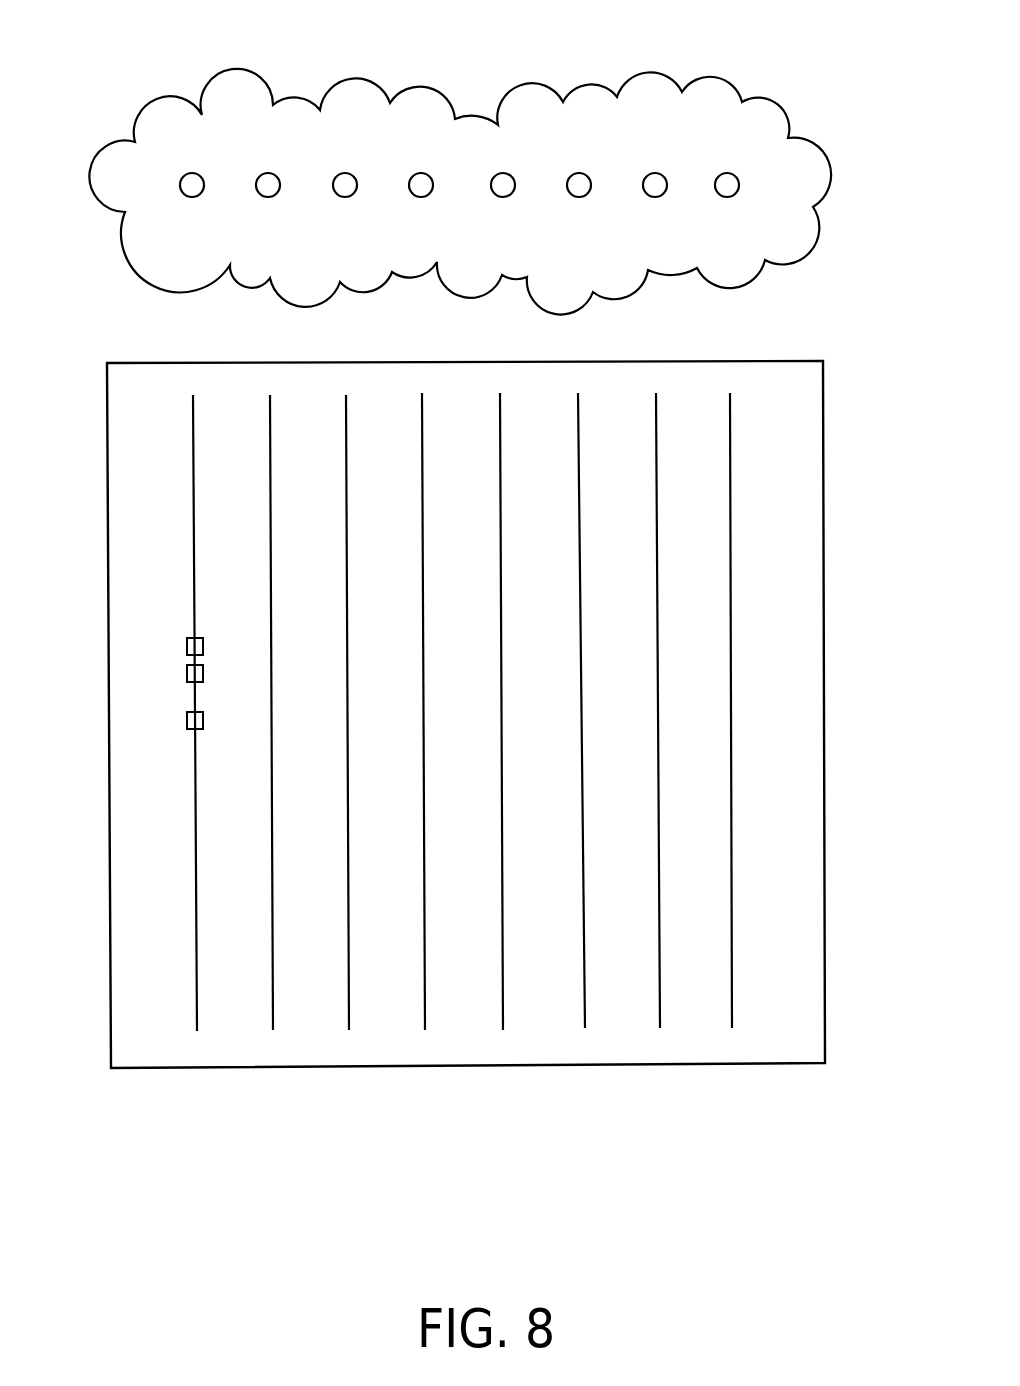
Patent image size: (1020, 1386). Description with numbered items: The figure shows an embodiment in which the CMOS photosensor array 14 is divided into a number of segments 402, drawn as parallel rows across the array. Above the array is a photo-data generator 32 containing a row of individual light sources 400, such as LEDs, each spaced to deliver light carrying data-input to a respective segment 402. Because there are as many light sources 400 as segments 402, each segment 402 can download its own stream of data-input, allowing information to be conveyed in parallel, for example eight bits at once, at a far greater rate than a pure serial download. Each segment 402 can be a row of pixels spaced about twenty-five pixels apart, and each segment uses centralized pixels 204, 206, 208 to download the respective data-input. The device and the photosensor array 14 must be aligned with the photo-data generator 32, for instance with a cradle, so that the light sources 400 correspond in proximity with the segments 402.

The CMOS photosensor array 14 is at (866, 493).
The photo-data generator 32 is at (769, 218).
The light source 400 is at (422, 178).
The segment 402 is at (203, 423).
The centralized pixel 204 is at (187, 651).
The centralized pixel 206 is at (187, 680).
The centralized pixel 208 is at (187, 727).